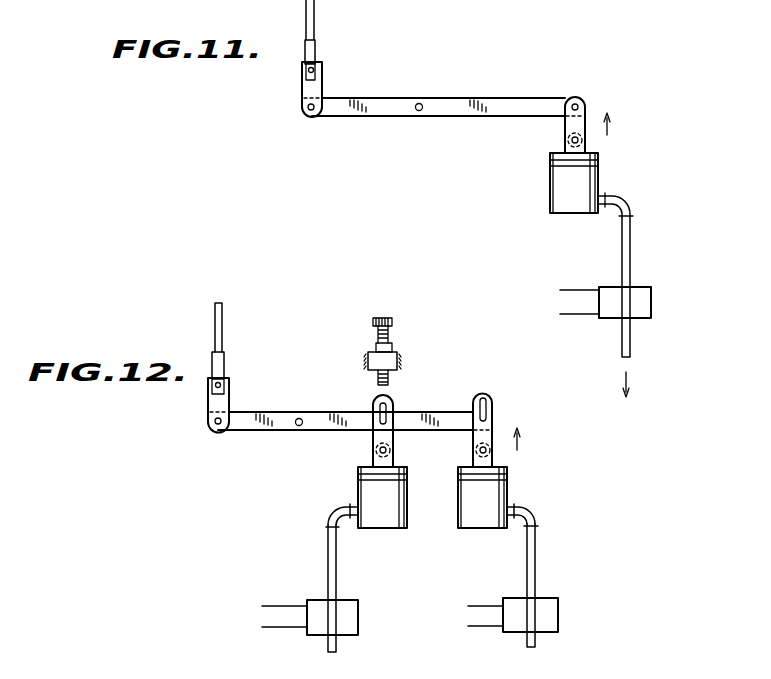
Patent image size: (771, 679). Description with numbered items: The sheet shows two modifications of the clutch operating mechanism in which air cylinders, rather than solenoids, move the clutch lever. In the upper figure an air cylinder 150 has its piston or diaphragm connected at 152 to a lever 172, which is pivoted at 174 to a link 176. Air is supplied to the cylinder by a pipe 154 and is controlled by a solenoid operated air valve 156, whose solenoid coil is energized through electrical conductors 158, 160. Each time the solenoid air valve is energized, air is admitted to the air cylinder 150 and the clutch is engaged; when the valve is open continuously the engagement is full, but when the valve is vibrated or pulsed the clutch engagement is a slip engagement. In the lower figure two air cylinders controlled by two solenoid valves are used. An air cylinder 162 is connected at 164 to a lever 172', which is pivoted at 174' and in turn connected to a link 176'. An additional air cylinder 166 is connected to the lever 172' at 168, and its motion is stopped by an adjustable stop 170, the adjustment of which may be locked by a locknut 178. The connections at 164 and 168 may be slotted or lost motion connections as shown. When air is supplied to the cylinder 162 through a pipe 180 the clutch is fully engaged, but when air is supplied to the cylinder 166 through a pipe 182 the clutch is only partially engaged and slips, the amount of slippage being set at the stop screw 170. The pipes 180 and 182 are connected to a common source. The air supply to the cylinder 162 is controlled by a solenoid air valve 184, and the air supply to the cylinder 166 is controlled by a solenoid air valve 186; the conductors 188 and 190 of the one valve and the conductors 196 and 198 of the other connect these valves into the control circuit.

In FIG. 11, the air cylinder 150 is at (550, 183).
In FIG. 11, the connection of piston to lever 152 is at (580, 100).
In FIG. 11, the pipe 154 is at (632, 345).
In FIG. 11, the air valve 156 is at (651, 306).
In FIG. 11, the electrical conductor 158 is at (576, 290).
In FIG. 11, the electrical conductor 160 is at (578, 315).
In FIG. 12, the air cylinder 162 is at (512, 508).
In FIG. 12, the connection 164 is at (490, 422).
In FIG. 12, the additional air cylinder 166 is at (382, 512).
In FIG. 12, the connection 168 is at (393, 413).
In FIG. 12, the adjustable stop 170 is at (394, 377).
In FIG. 11, the lever 172 is at (438, 81).
In FIG. 12, the lever 172' is at (345, 400).
In FIG. 11, the pivot 174 is at (410, 141).
In FIG. 12, the pivot 174' is at (287, 454).
In FIG. 11, the link 176 is at (282, 71).
In FIG. 12, the link 176' is at (188, 380).
In FIG. 12, the locknut 178 is at (387, 347).
In FIG. 12, the pipe 180 is at (538, 644).
In FIG. 12, the pipe 182 is at (338, 644).
In FIG. 12, the solenoid air valve 184 is at (553, 612).
In FIG. 12, the solenoid air valve 186 is at (358, 614).
In FIG. 12, the conductor 188 is at (483, 606).
In FIG. 12, the conductor 190 is at (485, 628).
In FIG. 12, the conductor 196 is at (285, 606).
In FIG. 12, the conductor 198 is at (284, 628).